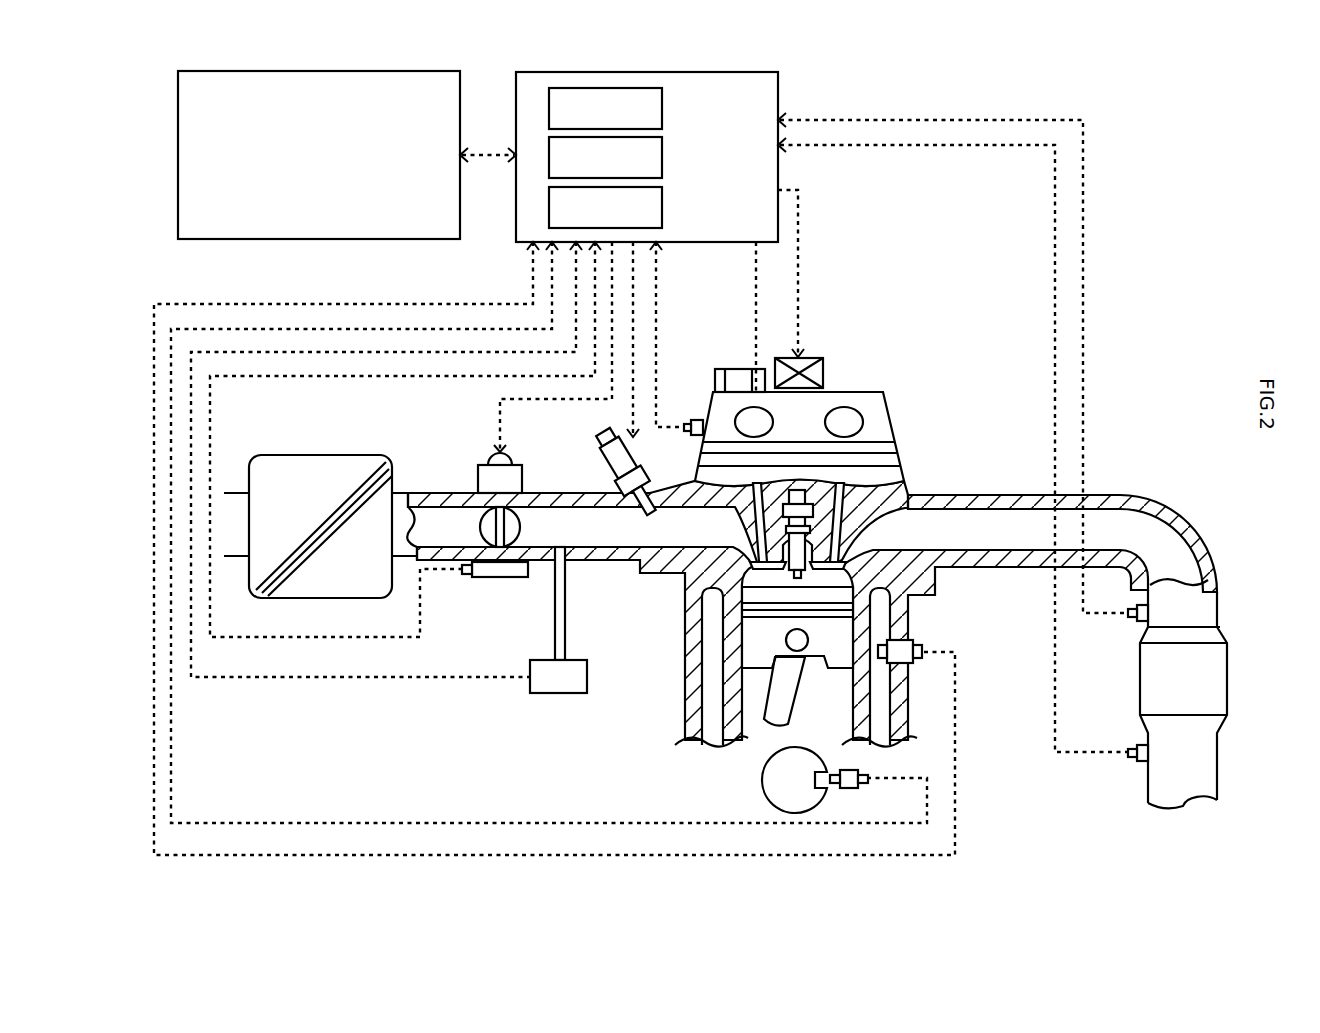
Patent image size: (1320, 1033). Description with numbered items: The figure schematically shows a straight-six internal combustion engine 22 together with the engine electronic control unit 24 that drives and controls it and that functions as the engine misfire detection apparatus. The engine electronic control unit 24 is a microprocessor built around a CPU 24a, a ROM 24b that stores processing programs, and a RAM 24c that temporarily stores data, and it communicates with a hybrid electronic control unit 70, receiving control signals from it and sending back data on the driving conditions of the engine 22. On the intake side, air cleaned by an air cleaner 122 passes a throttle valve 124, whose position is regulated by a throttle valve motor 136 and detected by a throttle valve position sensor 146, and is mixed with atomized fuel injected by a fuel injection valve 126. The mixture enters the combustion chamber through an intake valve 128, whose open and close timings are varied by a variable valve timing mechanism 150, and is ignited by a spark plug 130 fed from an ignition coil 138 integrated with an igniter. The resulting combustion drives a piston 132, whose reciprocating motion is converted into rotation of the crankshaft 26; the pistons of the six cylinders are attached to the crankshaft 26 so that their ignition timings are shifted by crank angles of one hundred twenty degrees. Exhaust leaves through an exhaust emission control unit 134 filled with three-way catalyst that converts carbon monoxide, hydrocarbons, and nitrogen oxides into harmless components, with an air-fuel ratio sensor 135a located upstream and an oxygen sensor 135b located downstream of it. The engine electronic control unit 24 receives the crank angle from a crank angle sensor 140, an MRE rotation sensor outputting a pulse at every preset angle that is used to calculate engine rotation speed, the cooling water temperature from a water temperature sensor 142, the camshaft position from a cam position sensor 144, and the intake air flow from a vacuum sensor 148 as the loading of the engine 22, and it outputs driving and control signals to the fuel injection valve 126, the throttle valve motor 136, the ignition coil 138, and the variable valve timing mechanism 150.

The hybrid electronic control unit 70 is at (318, 71).
The engine electronic control unit 24 is at (647, 136).
The CPU 24a is at (662, 107).
The ROM 24b is at (662, 156).
The RAM 24c is at (662, 205).
The engine 22 is at (747, 518).
The crankshaft 26 is at (762, 780).
The air cleaner 122 is at (320, 455).
The throttle valve 124 is at (487, 530).
The fuel injection valve 126 is at (612, 505).
The intake valve 128 is at (770, 565).
The spark plug 130 is at (797, 558).
The piston 132 is at (760, 640).
The exhaust emission control unit 134 is at (1210, 697).
The air-fuel ratio sensor 135a is at (1137, 615).
The oxygen sensor 135b is at (1137, 757).
The throttle valve motor 136 is at (478, 468).
The ignition coil 138 is at (826, 374).
The crank angle sensor 140 is at (850, 788).
The water temperature sensor 142 is at (907, 641).
The cam position sensor 144 is at (692, 424).
The throttle valve position sensor 146 is at (499, 582).
The vacuum sensor 148 is at (557, 696).
The variable valve timing mechanism 150 is at (897, 430).